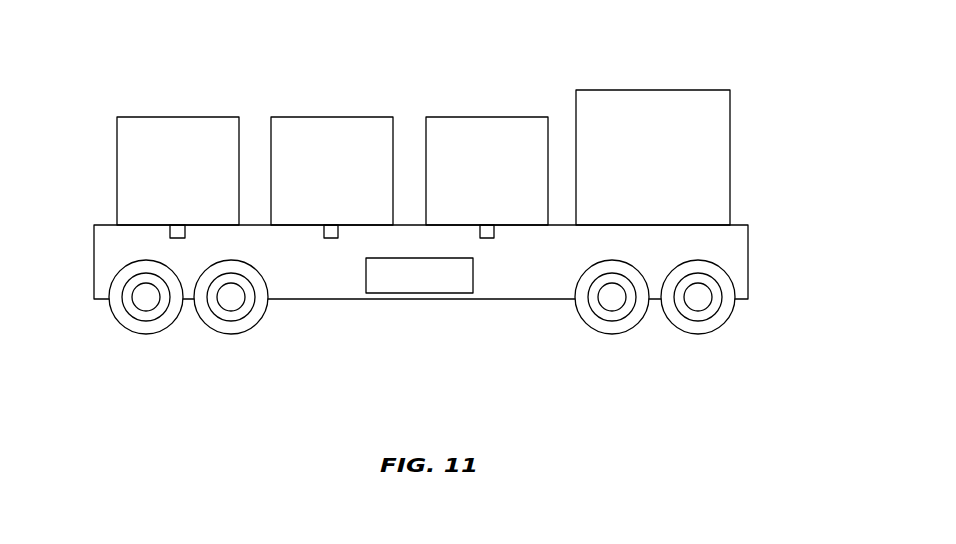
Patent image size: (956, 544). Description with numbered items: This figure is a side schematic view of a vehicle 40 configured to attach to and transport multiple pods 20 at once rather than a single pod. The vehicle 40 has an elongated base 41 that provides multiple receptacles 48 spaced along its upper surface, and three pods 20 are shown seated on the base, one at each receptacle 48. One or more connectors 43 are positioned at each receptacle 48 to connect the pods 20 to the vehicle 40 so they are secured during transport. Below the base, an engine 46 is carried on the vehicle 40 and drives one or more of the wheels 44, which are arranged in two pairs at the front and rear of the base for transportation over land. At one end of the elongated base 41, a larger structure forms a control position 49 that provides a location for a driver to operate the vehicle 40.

The pod 20 is at (197, 153).
The vehicle 40 is at (435, 210).
The elongated base 41 is at (105, 263).
The connector 43 is at (327, 232).
The wheel 44 is at (227, 327).
The engine 46 is at (437, 277).
The receptacle 48 is at (227, 225).
The control position 49 is at (670, 112).